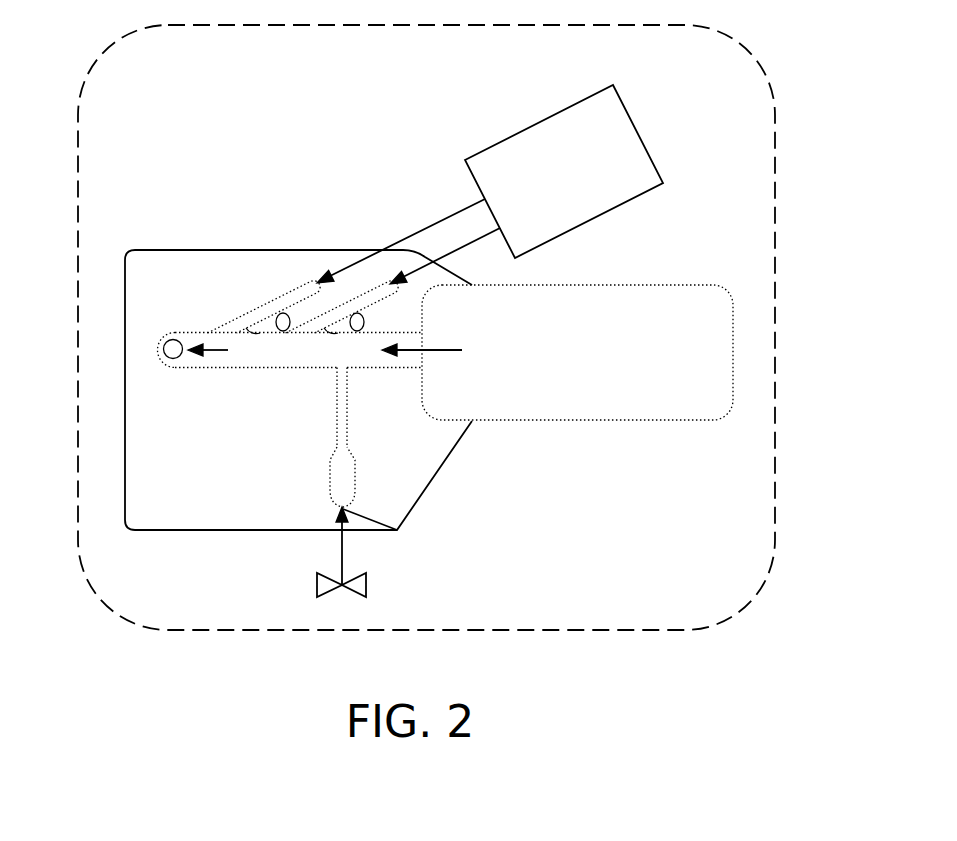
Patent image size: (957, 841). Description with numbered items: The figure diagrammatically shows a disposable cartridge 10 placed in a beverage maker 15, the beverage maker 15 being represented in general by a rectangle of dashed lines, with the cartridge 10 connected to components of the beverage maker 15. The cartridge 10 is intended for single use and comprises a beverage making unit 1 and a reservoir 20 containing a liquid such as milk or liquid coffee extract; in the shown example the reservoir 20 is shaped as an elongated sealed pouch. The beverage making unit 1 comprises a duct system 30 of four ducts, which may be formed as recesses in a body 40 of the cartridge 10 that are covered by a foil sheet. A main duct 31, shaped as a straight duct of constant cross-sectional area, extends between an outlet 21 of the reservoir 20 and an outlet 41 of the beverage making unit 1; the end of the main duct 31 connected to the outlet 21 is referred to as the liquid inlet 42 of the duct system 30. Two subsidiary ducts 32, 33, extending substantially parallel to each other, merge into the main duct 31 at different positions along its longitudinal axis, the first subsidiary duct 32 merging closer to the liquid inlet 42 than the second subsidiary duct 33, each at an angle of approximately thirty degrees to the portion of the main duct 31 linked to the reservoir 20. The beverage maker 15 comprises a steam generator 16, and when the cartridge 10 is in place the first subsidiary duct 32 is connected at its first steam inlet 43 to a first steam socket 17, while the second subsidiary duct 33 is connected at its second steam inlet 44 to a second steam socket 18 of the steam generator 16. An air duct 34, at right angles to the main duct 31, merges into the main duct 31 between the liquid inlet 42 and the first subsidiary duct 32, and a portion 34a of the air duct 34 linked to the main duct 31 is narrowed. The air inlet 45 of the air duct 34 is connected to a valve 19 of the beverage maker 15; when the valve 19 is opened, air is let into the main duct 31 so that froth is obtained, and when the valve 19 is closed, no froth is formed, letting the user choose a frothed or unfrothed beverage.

The beverage making unit 1 is at (160, 227).
The disposable cartridge 10 is at (480, 470).
The beverage maker 15 is at (777, 135).
The steam generator 16 is at (605, 147).
The first steam socket 17 is at (503, 225).
The second steam socket 18 is at (483, 195).
The valve 19 is at (358, 585).
The reservoir 20 is at (702, 400).
The outlet of the reservoir 21 is at (423, 357).
The liquid inlet 42 is at (423, 357).
The duct system 30 is at (213, 203).
The main duct 31 is at (255, 348).
The first subsidiary duct 32 is at (357, 303).
The second subsidiary duct 33 is at (285, 292).
The air duct 34 is at (340, 470).
The narrowed portion of the air duct 34a is at (340, 400).
The body 40 is at (142, 502).
The outlet of the beverage making unit 41 is at (172, 349).
The first steam inlet 43 is at (390, 278).
The second steam inlet 44 is at (315, 280).
The air inlet 45 is at (397, 530).